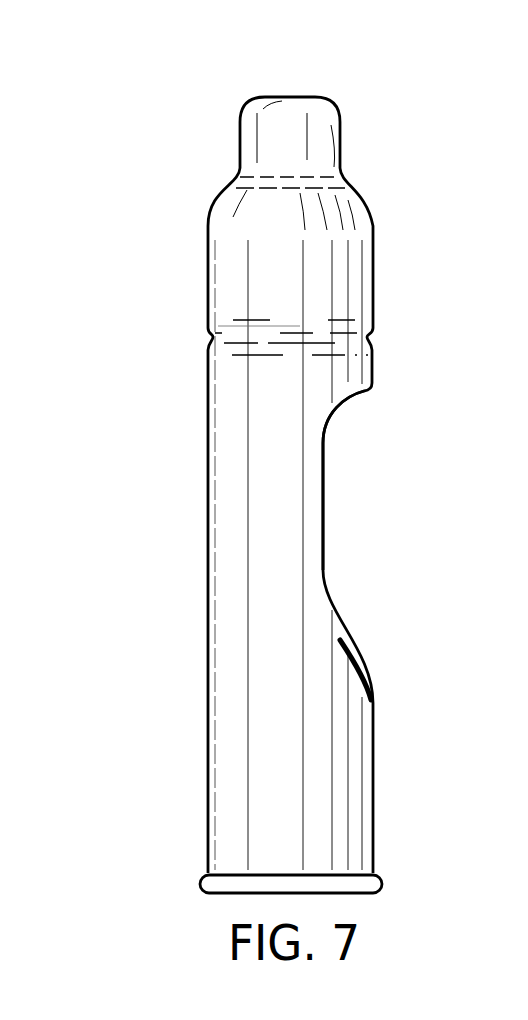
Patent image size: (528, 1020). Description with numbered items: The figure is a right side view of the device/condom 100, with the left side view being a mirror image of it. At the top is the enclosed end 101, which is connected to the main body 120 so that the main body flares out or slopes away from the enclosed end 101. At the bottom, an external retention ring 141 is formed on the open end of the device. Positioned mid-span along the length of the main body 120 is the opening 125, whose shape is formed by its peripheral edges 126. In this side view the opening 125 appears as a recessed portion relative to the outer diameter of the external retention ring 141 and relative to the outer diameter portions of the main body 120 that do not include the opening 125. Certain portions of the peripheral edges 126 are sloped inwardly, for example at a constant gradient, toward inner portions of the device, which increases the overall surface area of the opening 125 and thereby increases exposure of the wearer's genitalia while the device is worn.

The device/condom 100 is at (133, 185).
The enclosed end 101 is at (268, 123).
The main body 120 is at (273, 550).
The opening 125 is at (327, 482).
The peripheral edges 126 is at (338, 618).
The external retention ring 141 is at (220, 887).